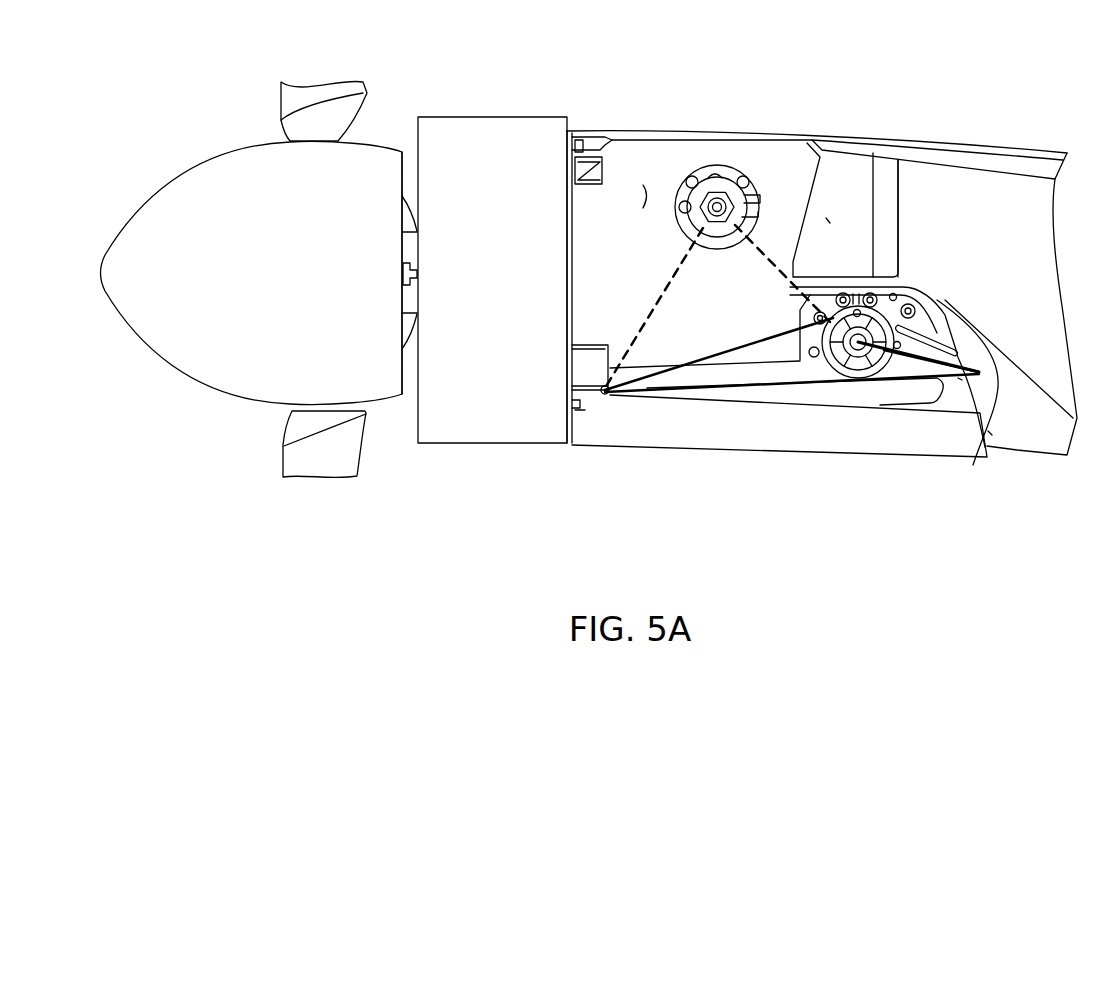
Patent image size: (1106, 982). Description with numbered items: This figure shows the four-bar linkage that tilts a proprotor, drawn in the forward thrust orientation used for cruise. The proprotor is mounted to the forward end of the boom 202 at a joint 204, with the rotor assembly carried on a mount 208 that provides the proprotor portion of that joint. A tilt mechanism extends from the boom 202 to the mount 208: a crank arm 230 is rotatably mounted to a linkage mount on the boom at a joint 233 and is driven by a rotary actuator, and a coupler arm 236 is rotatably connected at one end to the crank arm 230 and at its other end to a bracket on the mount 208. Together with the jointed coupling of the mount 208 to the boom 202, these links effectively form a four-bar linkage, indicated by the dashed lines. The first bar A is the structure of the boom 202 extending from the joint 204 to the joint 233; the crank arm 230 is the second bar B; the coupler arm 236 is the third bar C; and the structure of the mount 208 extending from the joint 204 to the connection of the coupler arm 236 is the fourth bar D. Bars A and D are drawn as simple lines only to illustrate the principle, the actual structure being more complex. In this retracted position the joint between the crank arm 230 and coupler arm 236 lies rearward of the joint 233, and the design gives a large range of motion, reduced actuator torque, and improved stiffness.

The boom 202 is at (970, 142).
The joint 204 is at (717, 205).
The mount 208 is at (632, 137).
The crank arm 230 is at (950, 337).
The joint 233 is at (866, 298).
The coupler arm 236 is at (808, 397).
The first bar A is at (803, 247).
The second bar B is at (960, 378).
The third bar C is at (990, 433).
The fourth bar D is at (677, 273).